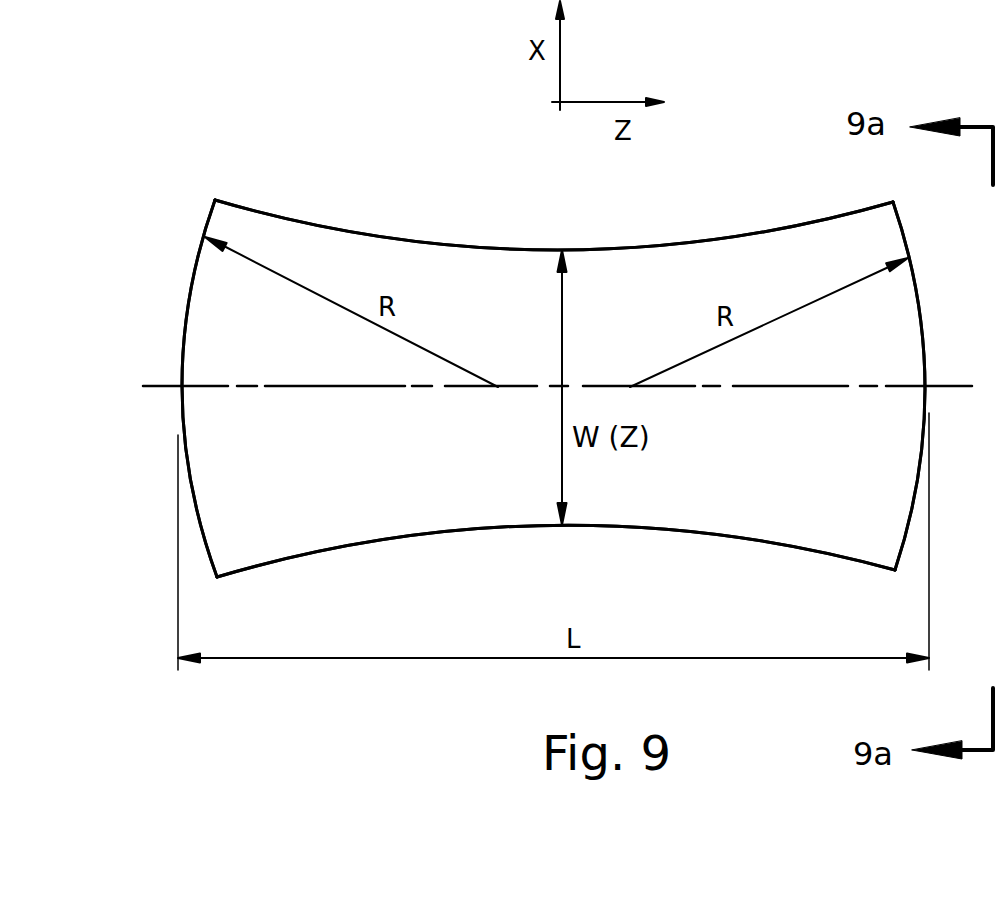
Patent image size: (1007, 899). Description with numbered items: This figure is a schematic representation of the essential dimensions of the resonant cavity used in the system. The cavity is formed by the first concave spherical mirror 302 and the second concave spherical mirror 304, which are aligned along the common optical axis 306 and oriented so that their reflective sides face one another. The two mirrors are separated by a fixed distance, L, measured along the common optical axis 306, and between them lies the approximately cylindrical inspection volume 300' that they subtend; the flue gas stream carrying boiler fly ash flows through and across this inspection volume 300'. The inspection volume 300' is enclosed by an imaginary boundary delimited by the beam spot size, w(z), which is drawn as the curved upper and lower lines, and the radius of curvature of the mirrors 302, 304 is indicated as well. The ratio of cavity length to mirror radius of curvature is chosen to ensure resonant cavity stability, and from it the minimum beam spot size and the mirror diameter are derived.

The inspection volume 300' is at (553, 388).
The first concave spherical mirror 302 is at (195, 495).
The second concave spherical mirror 304 is at (913, 480).
The common optical axis 306 is at (670, 386).